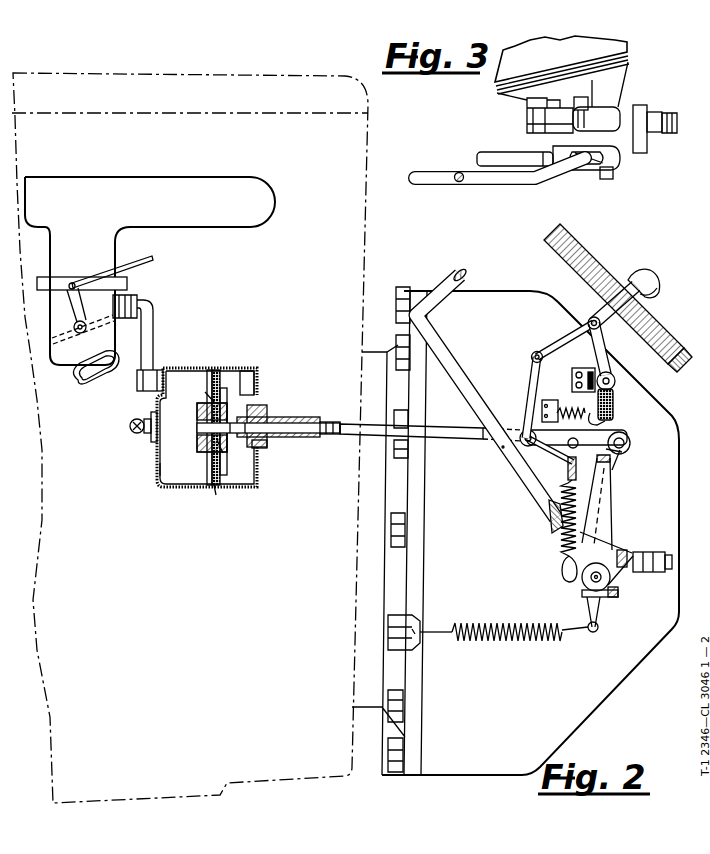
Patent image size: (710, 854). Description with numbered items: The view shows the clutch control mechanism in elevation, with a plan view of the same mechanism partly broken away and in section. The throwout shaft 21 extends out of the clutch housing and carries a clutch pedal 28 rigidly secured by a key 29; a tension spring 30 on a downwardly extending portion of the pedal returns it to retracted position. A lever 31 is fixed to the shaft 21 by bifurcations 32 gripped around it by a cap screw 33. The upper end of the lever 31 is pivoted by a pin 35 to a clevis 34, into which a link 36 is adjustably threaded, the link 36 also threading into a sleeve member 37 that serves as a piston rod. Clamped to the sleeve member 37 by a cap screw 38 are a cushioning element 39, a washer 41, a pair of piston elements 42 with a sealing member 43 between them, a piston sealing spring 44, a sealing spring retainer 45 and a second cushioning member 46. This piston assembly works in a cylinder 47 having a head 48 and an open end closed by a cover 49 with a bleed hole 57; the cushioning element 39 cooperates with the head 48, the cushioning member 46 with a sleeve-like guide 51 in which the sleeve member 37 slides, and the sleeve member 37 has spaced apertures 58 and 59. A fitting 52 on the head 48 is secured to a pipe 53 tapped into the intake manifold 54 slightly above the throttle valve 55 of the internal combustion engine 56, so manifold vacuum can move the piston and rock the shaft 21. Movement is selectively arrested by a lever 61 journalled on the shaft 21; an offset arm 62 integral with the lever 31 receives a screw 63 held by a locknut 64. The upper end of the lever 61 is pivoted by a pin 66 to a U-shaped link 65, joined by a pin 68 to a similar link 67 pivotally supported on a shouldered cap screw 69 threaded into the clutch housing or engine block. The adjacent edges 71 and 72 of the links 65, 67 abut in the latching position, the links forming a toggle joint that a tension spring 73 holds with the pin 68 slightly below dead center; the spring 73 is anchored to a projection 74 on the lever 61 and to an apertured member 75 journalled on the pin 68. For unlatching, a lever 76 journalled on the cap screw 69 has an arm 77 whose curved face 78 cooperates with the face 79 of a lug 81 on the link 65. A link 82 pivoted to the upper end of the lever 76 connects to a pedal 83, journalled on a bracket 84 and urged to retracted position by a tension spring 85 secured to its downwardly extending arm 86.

In FIG. 2, the throwout shaft 21 is at (584, 581).
In FIG. 2, the clutch pedal 28 is at (489, 400).
In FIG. 3, the clutch pedal 28 is at (488, 180).
In FIG. 2, the key 29 is at (503, 447).
In FIG. 2, the tension spring 30 is at (532, 643).
In FIG. 2, the lever 31 is at (600, 530).
In FIG. 2, the bifurcations 32 is at (611, 600).
In FIG. 2, the cap screw 33 is at (615, 597).
In FIG. 3, the clevis 34 is at (610, 160).
In FIG. 3, the pin 35 is at (608, 179).
In FIG. 2, the link 36 is at (442, 427).
In FIG. 3, the link 36 is at (507, 153).
In FIG. 2, the sleeve member 37 is at (312, 437).
In FIG. 2, the cap screw 38 is at (197, 430).
In FIG. 2, the cushioning element 39 is at (200, 410).
In FIG. 2, the washer 41 is at (197, 442).
In FIG. 2, the piston elements 42 is at (207, 395).
In FIG. 2, the sealing member 43 is at (212, 370).
In FIG. 2, the piston sealing spring 44 is at (217, 487).
In FIG. 2, the sealing spring retainer 45 is at (226, 405).
In FIG. 2, the second cushioning member 46 is at (221, 445).
In FIG. 2, the cylinder 47 is at (235, 368).
In FIG. 2, the cylinder head 48 is at (160, 476).
In FIG. 2, the cover 49 is at (262, 404).
In FIG. 2, the sleeve-like guide 51 is at (260, 449).
In FIG. 2, the fitting 52 is at (150, 378).
In FIG. 2, the pipe 53 is at (154, 318).
In FIG. 2, the intake manifold 54 is at (103, 251).
In FIG. 2, the throttle valve 55 is at (81, 333).
In FIG. 2, the internal combustion engine 56 is at (365, 262).
In FIG. 2, the bleed hole 57 is at (258, 380).
In FIG. 2, the aperture 58 is at (270, 418).
In FIG. 2, the aperture 59 is at (320, 421).
In FIG. 2, the lever 61 is at (615, 470).
In FIG. 2, the offset arm 62 is at (622, 550).
In FIG. 3, the offset arm 62 is at (639, 108).
In FIG. 2, the screw 63 is at (650, 552).
In FIG. 3, the screw 63 is at (657, 130).
In FIG. 2, the locknut 64 is at (660, 570).
In FIG. 3, the locknut 64 is at (662, 116).
In FIG. 2, the link 65 is at (624, 452).
In FIG. 3, the link 65 is at (595, 112).
In FIG. 2, the pin 66 is at (631, 443).
In FIG. 2, the link 67 is at (537, 428).
In FIG. 3, the link 67 is at (545, 118).
In FIG. 2, the pin 68 is at (596, 442).
In FIG. 3, the pin 68 is at (580, 97).
In FIG. 2, the cap screw 69 is at (524, 448).
In FIG. 2, the edge 71 is at (547, 400).
In FIG. 2, the edge 72 is at (603, 426).
In FIG. 2, the tension spring 73 is at (561, 540).
In FIG. 2, the projection 74 is at (562, 574).
In FIG. 2, the apertured member 75 is at (570, 449).
In FIG. 2, the lever 76 is at (530, 398).
In FIG. 2, the arm 77 is at (540, 449).
In FIG. 2, the curved face 78 is at (551, 465).
In FIG. 2, the face 79 is at (540, 438).
In FIG. 2, the lug 81 is at (532, 372).
In FIG. 2, the link 82 is at (570, 343).
In FIG. 2, the pedal 83 is at (642, 301).
In FIG. 2, the bracket 84 is at (580, 368).
In FIG. 2, the tension spring 85 is at (571, 407).
In FIG. 2, the downwardly extending arm 86 is at (613, 397).